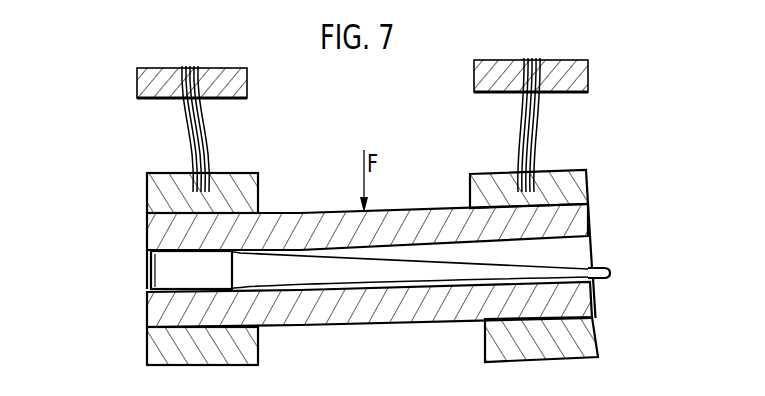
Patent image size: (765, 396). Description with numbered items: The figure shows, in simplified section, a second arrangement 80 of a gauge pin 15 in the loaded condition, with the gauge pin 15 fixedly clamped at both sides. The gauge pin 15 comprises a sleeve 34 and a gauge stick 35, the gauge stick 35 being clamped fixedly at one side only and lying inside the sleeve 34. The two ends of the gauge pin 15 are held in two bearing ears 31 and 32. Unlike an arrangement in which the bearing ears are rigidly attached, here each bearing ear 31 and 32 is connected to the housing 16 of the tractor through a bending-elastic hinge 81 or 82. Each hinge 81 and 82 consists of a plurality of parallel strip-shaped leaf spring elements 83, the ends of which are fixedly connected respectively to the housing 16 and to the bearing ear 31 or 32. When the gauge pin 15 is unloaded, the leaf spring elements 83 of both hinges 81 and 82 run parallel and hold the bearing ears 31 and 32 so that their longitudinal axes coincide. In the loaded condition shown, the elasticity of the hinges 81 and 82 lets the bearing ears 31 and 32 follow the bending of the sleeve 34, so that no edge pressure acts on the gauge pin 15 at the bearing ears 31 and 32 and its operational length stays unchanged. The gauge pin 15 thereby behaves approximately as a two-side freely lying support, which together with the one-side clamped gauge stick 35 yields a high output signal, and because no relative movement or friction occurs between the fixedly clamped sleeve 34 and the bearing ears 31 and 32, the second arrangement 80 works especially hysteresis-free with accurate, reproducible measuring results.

The gauge pin 15 is at (292, 203).
The housing 16 is at (238, 84).
The bearing ear 31 is at (582, 188).
The bearing ear 32 is at (160, 190).
The sleeve 34 is at (430, 306).
The gauge stick 35 is at (361, 299).
The second arrangement 80 is at (118, 320).
The bending-elastic hinge 81 is at (512, 113).
The bending-elastic hinge 82 is at (210, 125).
The leaf spring elements 83 is at (536, 131).